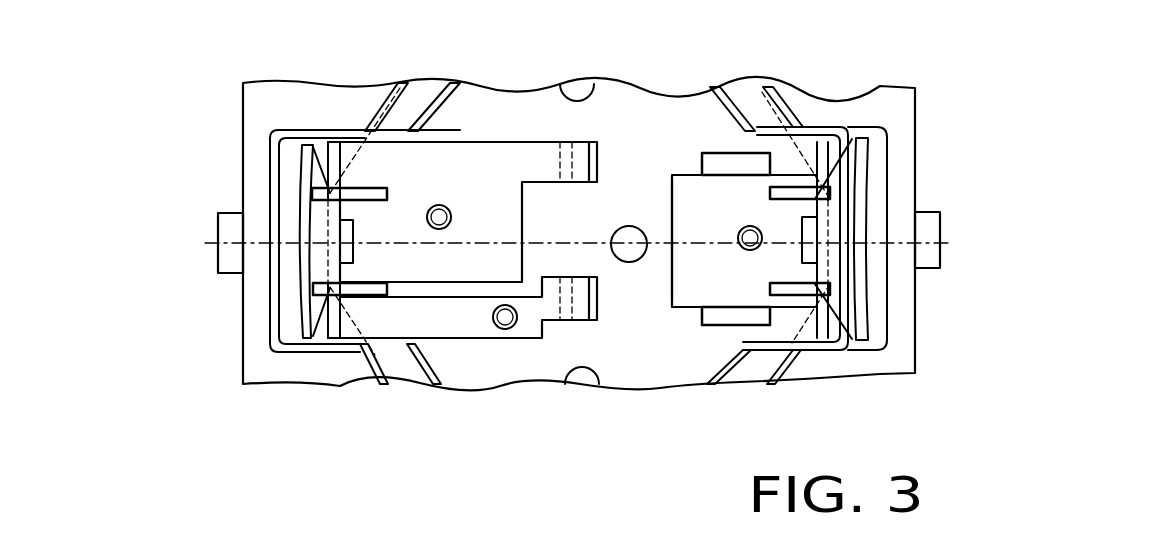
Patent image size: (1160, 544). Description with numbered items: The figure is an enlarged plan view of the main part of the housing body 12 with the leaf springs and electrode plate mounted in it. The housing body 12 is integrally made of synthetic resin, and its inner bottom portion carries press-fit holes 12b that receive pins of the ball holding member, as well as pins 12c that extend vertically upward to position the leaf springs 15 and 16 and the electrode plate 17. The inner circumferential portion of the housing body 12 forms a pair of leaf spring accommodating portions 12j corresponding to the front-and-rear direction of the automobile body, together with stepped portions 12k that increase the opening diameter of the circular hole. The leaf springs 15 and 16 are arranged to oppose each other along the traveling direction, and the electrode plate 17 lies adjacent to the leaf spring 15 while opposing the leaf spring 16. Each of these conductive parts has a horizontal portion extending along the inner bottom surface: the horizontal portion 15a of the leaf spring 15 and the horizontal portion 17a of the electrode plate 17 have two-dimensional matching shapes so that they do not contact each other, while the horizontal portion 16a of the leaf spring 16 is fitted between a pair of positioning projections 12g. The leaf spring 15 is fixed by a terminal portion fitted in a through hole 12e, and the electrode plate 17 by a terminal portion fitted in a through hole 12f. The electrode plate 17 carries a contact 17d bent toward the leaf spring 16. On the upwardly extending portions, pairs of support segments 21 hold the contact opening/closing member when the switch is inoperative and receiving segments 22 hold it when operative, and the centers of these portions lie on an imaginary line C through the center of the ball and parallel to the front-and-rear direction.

The housing body 12 is at (240, 111).
The press-fit holes 12b is at (576, 88).
The pins 12c is at (451, 210).
The through hole 12e is at (598, 160).
The through hole 12f is at (600, 300).
The positioning projections 12g is at (720, 156).
The leaf spring accommodating portions 12j is at (286, 305).
The stepped portions 12k is at (417, 86).
The leaf spring 15 is at (538, 130).
The horizontal portion 15a is at (499, 150).
The leaf spring 16 is at (690, 162).
The horizontal portion 16a is at (678, 206).
The electrode plate 17 is at (465, 355).
The horizontal portion 17a is at (486, 340).
The contact 17d is at (295, 218).
The support segments 21 is at (358, 198).
The receiving segment 22 is at (300, 172).
The imaginary line C is at (663, 248).